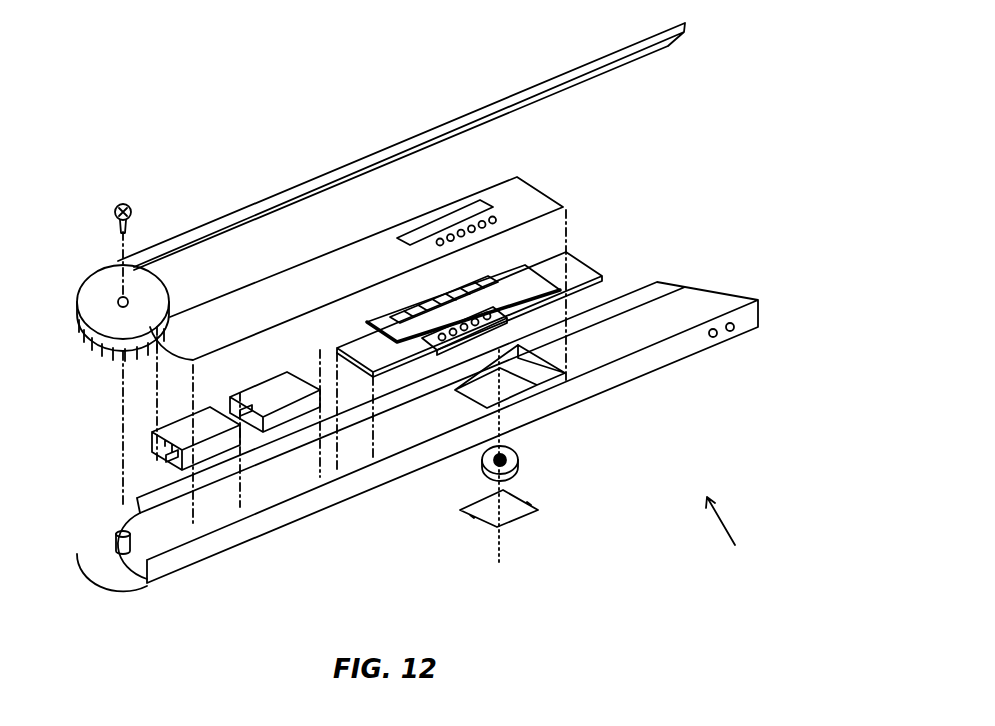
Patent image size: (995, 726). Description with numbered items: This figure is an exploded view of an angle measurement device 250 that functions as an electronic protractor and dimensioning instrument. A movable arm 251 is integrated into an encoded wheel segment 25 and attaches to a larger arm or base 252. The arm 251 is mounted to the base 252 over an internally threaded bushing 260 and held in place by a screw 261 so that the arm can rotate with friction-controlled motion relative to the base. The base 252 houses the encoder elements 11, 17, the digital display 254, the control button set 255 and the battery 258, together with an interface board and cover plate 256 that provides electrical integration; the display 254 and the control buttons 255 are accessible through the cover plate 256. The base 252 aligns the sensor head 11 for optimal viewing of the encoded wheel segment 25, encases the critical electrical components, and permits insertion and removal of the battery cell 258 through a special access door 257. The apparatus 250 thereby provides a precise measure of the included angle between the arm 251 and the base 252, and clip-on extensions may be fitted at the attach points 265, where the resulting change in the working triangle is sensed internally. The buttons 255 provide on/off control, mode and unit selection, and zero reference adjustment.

The angle measurement device 250 is at (737, 537).
The movable arm 251 is at (257, 203).
The base 252 is at (353, 490).
The digital display 254 is at (490, 273).
The control button set 255 is at (503, 320).
The cover plate 256 is at (520, 187).
The access door 257 is at (515, 520).
The battery 258 is at (513, 457).
The internally threaded bushing 260 is at (115, 533).
The screw 261 is at (113, 205).
The attach points 265 is at (732, 330).
The knurled knob 25 is at (85, 337).
The sensor head 11 is at (183, 427).
The encoder element 17 is at (260, 397).